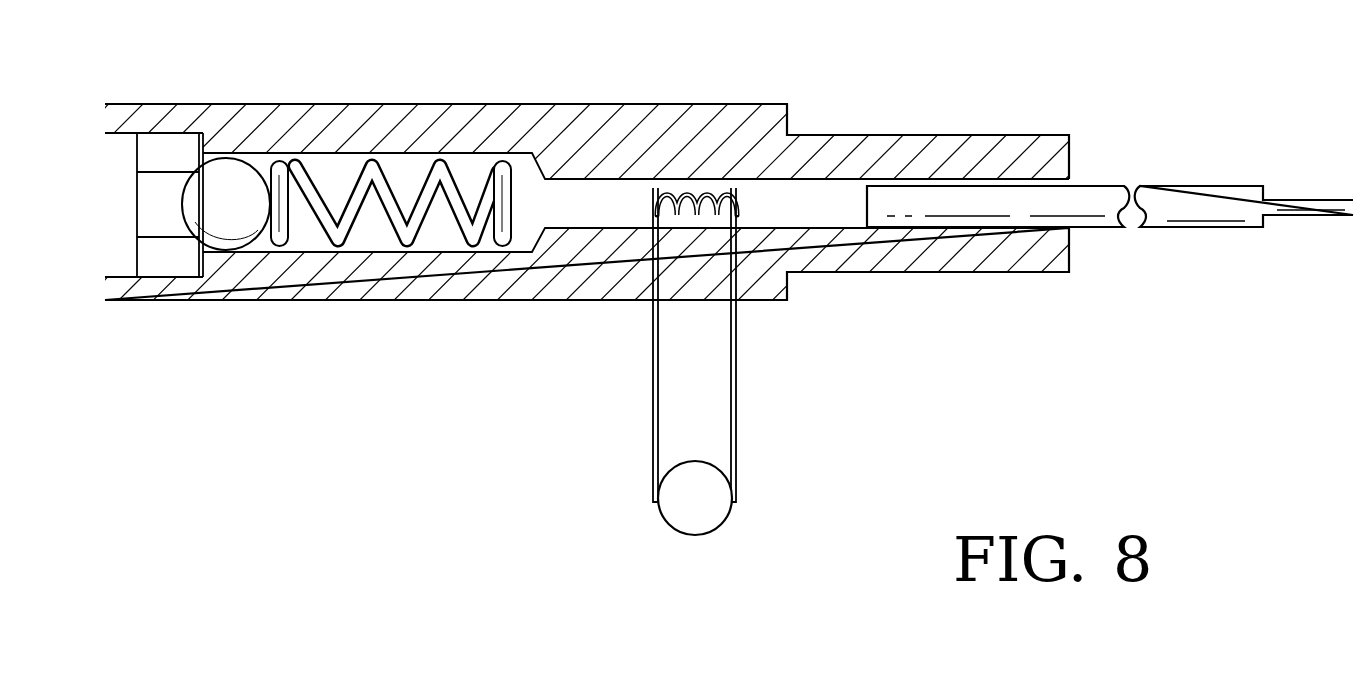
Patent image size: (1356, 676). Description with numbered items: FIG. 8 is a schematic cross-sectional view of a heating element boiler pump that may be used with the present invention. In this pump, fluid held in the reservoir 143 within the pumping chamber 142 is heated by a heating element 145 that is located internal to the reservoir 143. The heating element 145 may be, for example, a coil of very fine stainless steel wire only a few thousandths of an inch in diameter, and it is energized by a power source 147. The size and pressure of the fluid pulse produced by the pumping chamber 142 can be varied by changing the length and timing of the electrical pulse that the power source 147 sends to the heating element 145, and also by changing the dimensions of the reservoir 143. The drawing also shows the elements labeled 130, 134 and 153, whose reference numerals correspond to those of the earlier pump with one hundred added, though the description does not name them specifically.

The optical fiber 130 is at (1185, 183).
The end cap 134 is at (103, 165).
The pumping chamber 142 is at (472, 92).
The reservoir 143 is at (702, 183).
The heating element 145 is at (690, 205).
The power source 147 is at (692, 538).
The compression spring 153 is at (358, 235).